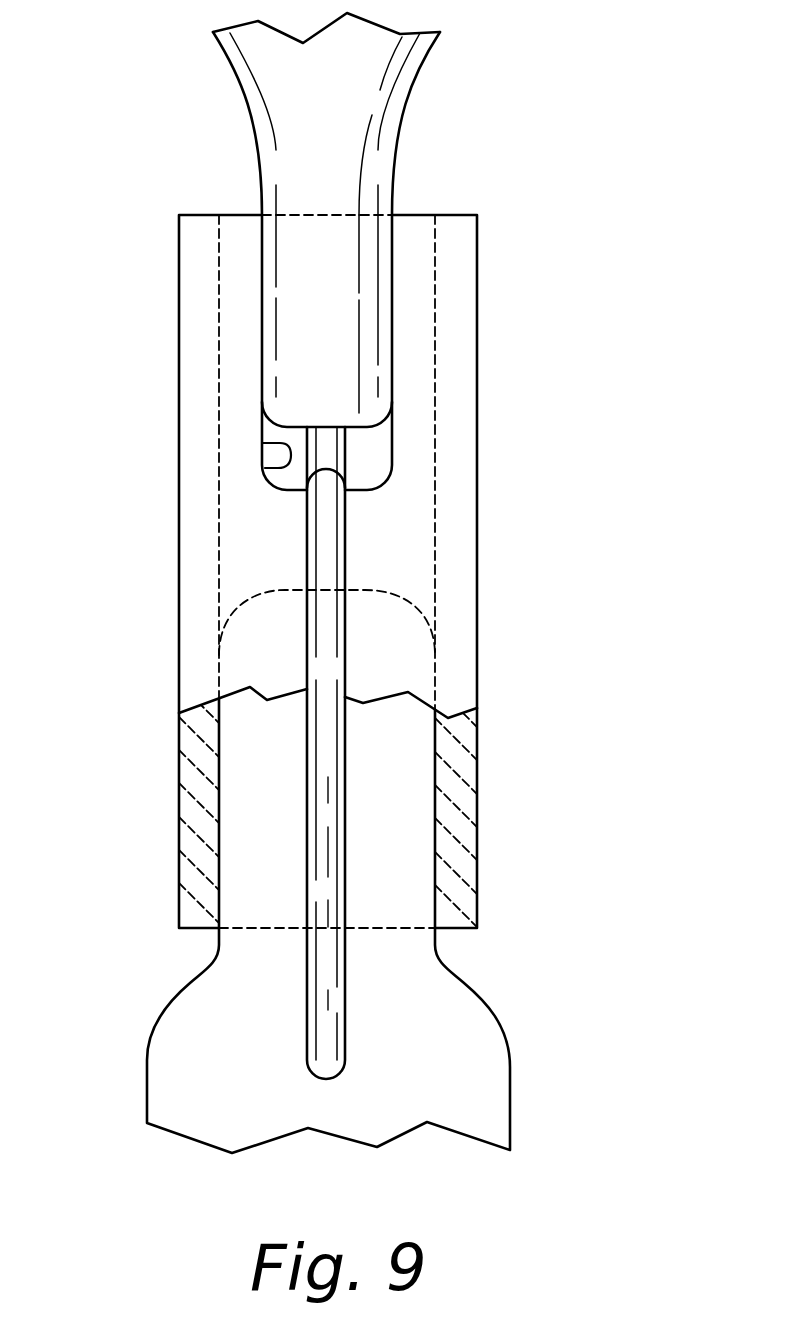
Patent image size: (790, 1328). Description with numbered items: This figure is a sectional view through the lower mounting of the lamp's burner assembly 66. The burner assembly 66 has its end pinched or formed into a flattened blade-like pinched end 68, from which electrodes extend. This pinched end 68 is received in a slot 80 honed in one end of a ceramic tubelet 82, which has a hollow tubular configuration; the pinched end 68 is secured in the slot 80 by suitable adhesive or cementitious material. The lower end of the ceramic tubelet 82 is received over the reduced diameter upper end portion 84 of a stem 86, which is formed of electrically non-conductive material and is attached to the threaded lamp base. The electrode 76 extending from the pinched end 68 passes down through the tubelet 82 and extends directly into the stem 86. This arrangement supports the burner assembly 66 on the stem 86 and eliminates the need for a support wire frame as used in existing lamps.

The burner assembly 66 is at (418, 87).
The pinched end 68 is at (305, 298).
The electrode 76 is at (320, 742).
The slot 80 is at (270, 470).
The ceramic tubelet 82 is at (477, 350).
The reduced diameter upper end portion 84 is at (383, 642).
The stem 86 is at (165, 1017).